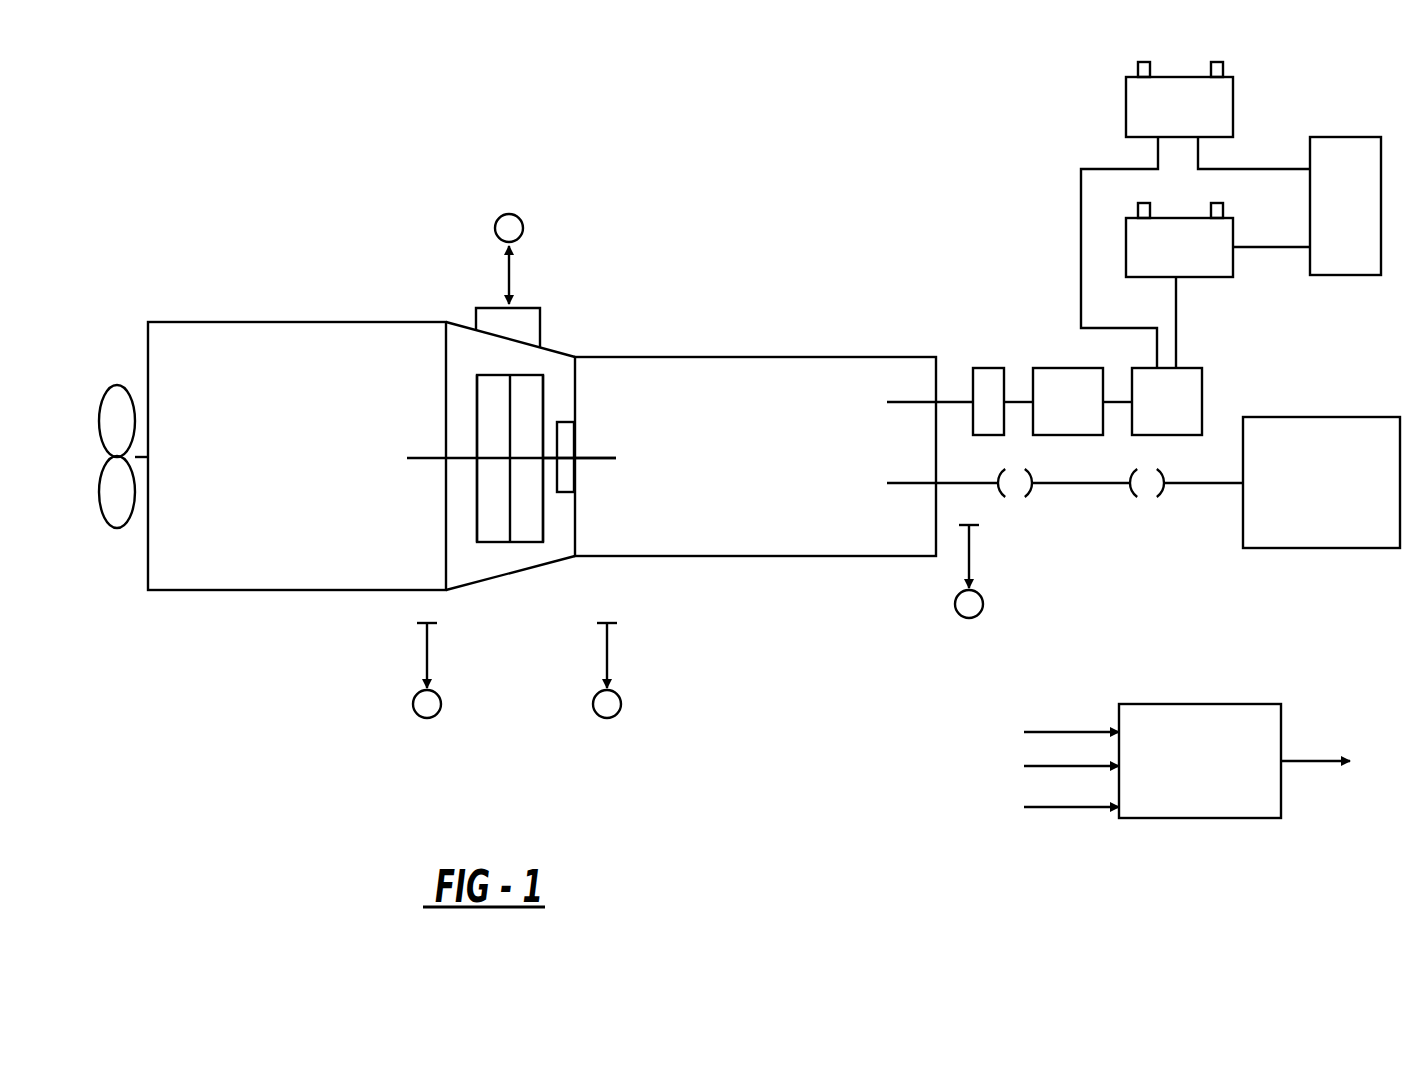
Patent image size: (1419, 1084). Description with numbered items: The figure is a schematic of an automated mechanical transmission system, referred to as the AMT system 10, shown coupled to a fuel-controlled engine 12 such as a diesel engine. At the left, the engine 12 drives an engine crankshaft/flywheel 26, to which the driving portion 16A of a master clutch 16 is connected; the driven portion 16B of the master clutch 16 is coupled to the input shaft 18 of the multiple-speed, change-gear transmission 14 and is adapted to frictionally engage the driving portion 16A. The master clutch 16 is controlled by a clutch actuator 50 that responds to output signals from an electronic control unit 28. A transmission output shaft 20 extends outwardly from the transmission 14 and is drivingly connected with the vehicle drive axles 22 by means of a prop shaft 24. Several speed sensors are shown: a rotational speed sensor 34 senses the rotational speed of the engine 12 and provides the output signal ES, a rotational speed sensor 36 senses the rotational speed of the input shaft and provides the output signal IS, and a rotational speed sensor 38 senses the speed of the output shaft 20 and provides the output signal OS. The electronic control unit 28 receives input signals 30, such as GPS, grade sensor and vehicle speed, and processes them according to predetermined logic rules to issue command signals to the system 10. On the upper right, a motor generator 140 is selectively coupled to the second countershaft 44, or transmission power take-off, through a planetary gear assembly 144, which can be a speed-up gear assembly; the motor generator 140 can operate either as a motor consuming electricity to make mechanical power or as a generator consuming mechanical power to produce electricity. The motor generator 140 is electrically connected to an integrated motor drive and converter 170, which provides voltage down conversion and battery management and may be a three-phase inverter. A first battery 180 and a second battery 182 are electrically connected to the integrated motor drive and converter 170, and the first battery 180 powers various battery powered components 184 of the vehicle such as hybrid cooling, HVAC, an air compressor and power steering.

The AMT system 10 is at (797, 258).
The engine 12 is at (248, 563).
The transmission 14 is at (778, 507).
The master clutch 16 is at (507, 548).
The driving portion 16A is at (487, 420).
The driven portion 16B is at (525, 490).
The input shaft 18 is at (616, 458).
The transmission output shaft 20 is at (970, 483).
The vehicle drive axles 22 is at (1297, 548).
The prop shaft 24 is at (1078, 483).
The engine crankshaft/flywheel 26 is at (420, 458).
The electronic control unit 28 is at (1203, 797).
The input signals 30 is at (1077, 846).
The rotational speed sensor 34 is at (428, 643).
The rotational speed sensor 36 is at (612, 643).
The rotational speed sensor 38 is at (975, 560).
The second countershaft 44 is at (958, 402).
The clutch actuator 50 is at (490, 315).
The motor generator 140 is at (1060, 368).
The planetary gear assembly 144 is at (985, 368).
The integrated motor drive and converter 170 is at (1202, 392).
The first battery 180 is at (1208, 277).
The second battery 182 is at (1127, 98).
The battery powered components 184 is at (1335, 138).